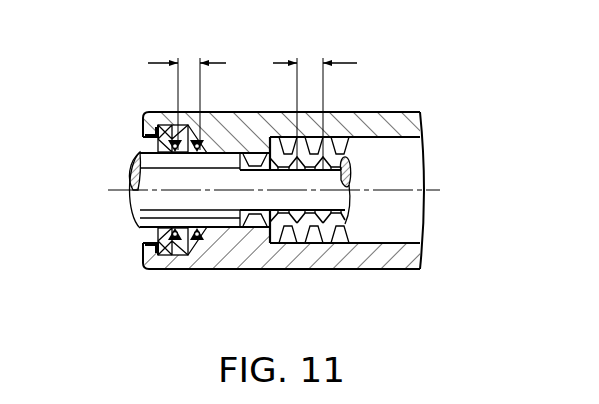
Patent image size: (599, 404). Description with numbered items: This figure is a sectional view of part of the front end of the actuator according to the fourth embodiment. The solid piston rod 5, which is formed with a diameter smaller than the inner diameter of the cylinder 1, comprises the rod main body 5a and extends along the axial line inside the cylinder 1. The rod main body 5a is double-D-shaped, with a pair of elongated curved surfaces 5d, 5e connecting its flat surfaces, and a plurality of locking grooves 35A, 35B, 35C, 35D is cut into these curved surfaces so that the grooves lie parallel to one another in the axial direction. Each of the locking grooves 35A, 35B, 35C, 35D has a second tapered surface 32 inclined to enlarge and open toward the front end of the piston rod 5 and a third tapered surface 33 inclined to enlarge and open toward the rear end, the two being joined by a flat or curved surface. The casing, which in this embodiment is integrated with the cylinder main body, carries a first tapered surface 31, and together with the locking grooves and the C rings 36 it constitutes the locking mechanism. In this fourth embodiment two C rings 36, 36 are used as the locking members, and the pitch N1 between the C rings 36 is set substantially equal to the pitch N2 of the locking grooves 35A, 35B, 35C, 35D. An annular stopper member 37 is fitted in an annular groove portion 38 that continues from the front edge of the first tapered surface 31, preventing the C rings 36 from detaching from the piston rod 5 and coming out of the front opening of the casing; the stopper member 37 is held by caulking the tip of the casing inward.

The cylinder 1 is at (416, 108).
The piston rod 5 is at (358, 156).
The rod main body 5a is at (218, 177).
The elongated curved surface 5d is at (138, 160).
The elongated curved surface 5e is at (127, 220).
The first tapered surface 31 is at (163, 147).
The second tapered surface 32 is at (337, 149).
The third tapered surface 33 is at (283, 151).
The locking groove 35A is at (250, 226).
The locking groove 35B is at (281, 231).
The locking groove 35C is at (307, 231).
The locking groove 35D is at (337, 229).
The C ring 36 is at (190, 245).
The stopper member 37 is at (152, 115).
The groove portion 38 is at (158, 237).
The pitch between the C rings N1 is at (188, 63).
The pitch of the locking grooves N2 is at (308, 63).